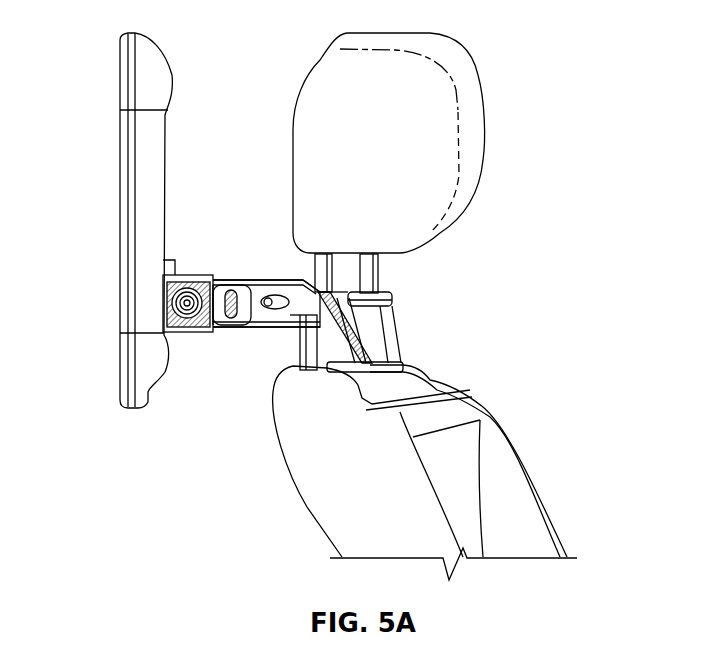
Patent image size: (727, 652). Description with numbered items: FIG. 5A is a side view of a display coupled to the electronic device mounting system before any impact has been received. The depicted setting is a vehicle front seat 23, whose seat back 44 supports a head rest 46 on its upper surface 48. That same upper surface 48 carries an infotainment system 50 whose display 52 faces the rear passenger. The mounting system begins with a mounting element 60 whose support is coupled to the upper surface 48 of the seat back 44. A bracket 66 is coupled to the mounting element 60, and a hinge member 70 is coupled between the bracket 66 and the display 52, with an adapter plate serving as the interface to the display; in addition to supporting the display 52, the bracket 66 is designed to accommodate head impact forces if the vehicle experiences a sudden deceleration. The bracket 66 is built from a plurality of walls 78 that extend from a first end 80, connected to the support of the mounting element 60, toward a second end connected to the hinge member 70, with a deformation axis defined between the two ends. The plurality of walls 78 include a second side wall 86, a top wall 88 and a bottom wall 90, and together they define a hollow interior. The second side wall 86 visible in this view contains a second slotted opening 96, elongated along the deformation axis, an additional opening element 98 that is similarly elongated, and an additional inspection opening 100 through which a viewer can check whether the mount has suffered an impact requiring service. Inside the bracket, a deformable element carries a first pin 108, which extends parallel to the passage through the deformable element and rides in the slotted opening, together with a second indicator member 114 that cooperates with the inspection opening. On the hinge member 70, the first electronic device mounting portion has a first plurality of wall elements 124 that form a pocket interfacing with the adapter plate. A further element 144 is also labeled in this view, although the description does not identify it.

The front seat 23 is at (457, 465).
The seat back 44 is at (513, 478).
The head rest 46 is at (440, 113).
The upper surface 48 is at (427, 388).
The infotainment system 50 is at (208, 241).
The display 52 is at (152, 137).
The mounting element 60 is at (378, 384).
The bracket 66 is at (232, 329).
The hinge member 70 is at (149, 305).
The plurality of walls 78 is at (318, 288).
The first end 80 is at (357, 294).
The second side wall 86 is at (307, 313).
The top wall 88 is at (276, 328).
The bottom wall 90 is at (222, 341).
The second slotted opening 96 is at (212, 287).
The additional opening element 98 is at (230, 288).
The additional inspection opening 100 is at (268, 310).
The first pin 108 is at (220, 316).
The second indicator member 114 is at (254, 328).
The first plurality of wall elements 124 is at (180, 328).
The pivot pin 144 is at (185, 303).